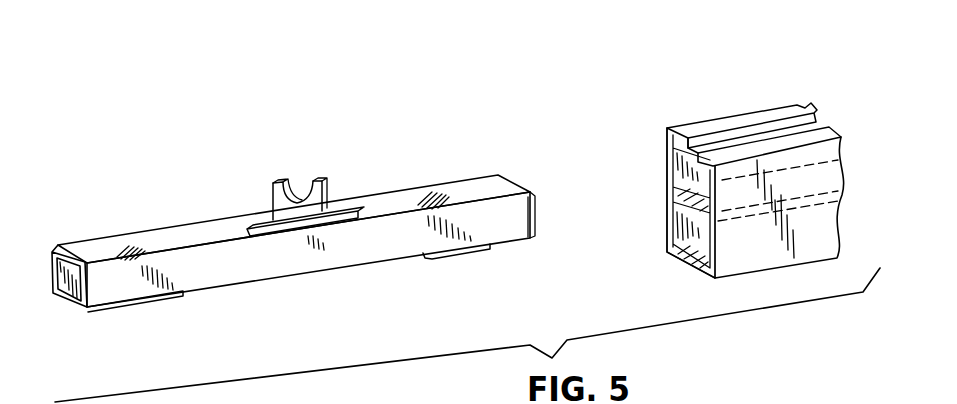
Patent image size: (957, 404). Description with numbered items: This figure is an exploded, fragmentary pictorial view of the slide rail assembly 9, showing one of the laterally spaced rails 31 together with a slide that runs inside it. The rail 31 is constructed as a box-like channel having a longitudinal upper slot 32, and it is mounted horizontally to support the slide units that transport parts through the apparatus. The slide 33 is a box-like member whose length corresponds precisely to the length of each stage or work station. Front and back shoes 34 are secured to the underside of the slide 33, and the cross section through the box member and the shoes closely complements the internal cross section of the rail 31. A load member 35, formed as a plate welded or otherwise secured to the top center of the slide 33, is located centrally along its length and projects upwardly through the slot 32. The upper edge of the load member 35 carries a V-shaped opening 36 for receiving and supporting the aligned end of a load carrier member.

The slide rail assembly 9 is at (680, 262).
The rail 31 is at (667, 167).
The longitudinal upper slot 32 is at (775, 125).
The slide 33 is at (288, 265).
The shoe 34 is at (118, 305).
The load member 35 is at (325, 196).
The V-shaped opening 36 is at (297, 183).